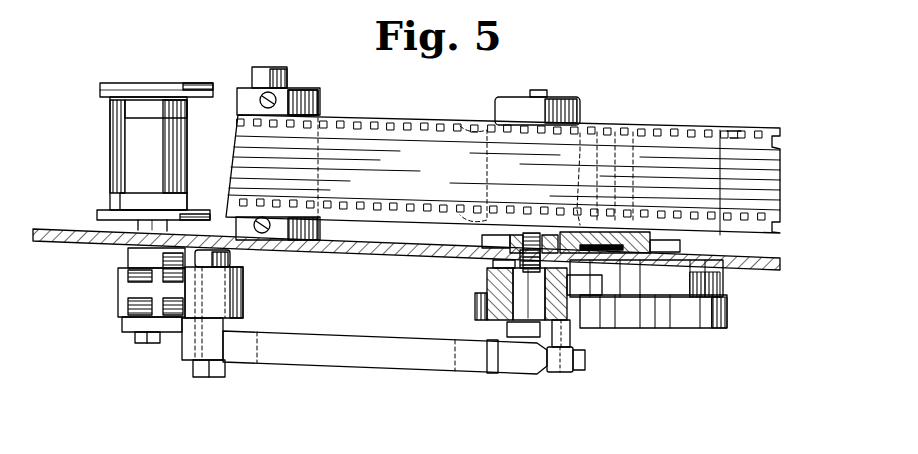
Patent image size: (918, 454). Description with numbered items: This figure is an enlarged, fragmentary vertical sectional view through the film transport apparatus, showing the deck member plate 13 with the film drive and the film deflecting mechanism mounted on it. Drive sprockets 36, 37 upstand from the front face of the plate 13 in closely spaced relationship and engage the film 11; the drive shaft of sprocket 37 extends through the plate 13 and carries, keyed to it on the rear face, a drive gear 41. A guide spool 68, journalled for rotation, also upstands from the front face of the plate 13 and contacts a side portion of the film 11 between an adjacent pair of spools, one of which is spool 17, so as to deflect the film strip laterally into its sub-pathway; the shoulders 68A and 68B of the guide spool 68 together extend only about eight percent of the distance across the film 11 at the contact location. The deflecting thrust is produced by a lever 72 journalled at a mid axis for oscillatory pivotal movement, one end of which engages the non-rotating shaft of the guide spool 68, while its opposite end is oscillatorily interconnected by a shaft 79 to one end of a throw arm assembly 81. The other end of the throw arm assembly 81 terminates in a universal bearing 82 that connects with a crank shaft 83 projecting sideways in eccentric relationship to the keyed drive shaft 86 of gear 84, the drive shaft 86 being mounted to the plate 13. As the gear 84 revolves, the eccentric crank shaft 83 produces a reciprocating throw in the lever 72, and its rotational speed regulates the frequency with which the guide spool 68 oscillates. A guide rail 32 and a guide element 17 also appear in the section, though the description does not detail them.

The film 11 is at (110, 148).
The plate 13 is at (82, 243).
The spool 17 is at (312, 103).
The film guide bracket 32 is at (275, 96).
The drive sprocket 36 is at (736, 133).
The drive sprocket 37 is at (480, 128).
The drive gear 41 is at (727, 325).
The guide spool 68 is at (183, 90).
The shoulder 68A is at (146, 105).
The shoulder 68B is at (133, 202).
The lever 72 is at (133, 293).
The shaft 79 is at (243, 294).
The throw arm assembly 81 is at (368, 355).
The universal bearing 82 is at (575, 372).
The crank shaft 83 is at (570, 340).
The gear 84 is at (475, 307).
The drive shaft 86 is at (522, 292).